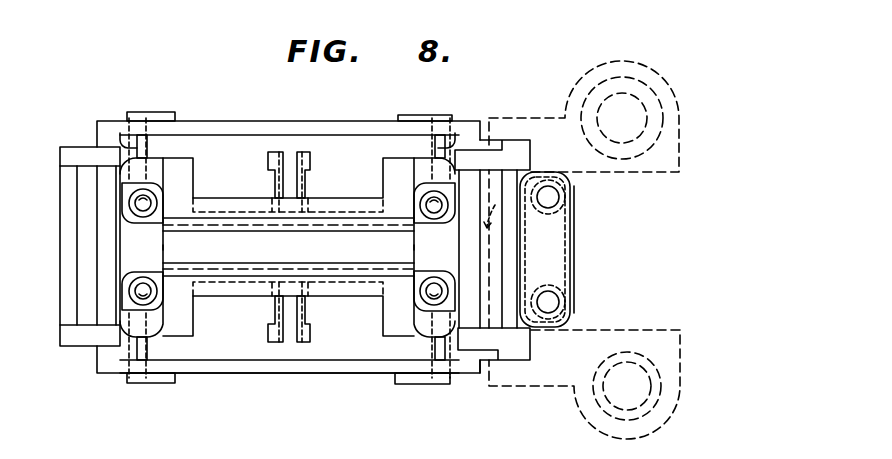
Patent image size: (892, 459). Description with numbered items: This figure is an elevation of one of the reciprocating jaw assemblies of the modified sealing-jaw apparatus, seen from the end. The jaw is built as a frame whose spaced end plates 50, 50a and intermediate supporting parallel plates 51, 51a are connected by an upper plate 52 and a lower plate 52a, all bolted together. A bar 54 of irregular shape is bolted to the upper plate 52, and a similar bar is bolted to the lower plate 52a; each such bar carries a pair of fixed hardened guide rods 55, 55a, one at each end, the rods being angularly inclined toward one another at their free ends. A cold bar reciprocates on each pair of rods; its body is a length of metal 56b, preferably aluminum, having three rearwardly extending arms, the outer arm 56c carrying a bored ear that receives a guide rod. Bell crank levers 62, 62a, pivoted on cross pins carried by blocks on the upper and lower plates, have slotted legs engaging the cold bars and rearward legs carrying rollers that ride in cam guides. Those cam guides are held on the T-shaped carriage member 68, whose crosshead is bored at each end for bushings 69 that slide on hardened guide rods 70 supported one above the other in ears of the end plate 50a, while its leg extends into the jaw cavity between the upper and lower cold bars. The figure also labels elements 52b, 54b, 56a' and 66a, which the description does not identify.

The end plate 50 is at (60, 290).
The end plate 50a is at (512, 302).
The intermediate supporting plate 51 is at (112, 229).
The intermediate supporting plate 51a is at (475, 308).
The upper plate 52 is at (70, 147).
The lower plate 52a is at (78, 339).
The insert member 52b is at (292, 157).
The bar 54 is at (308, 128).
The lower housing wall 54b is at (303, 368).
The hardened guide rod 55 is at (118, 142).
The hardened guide rod 55a is at (132, 343).
The clamp bolt 56a' is at (415, 230).
The length of metal 56b is at (186, 221).
The outer arm 56c is at (152, 175).
The bell crank lever 62 is at (267, 160).
The bell crank lever 62a is at (273, 345).
The pivot axis 66a is at (491, 209).
The carriage member 68 is at (568, 238).
The bushing 69 is at (568, 195).
The hardened guide rod 70 is at (555, 207).